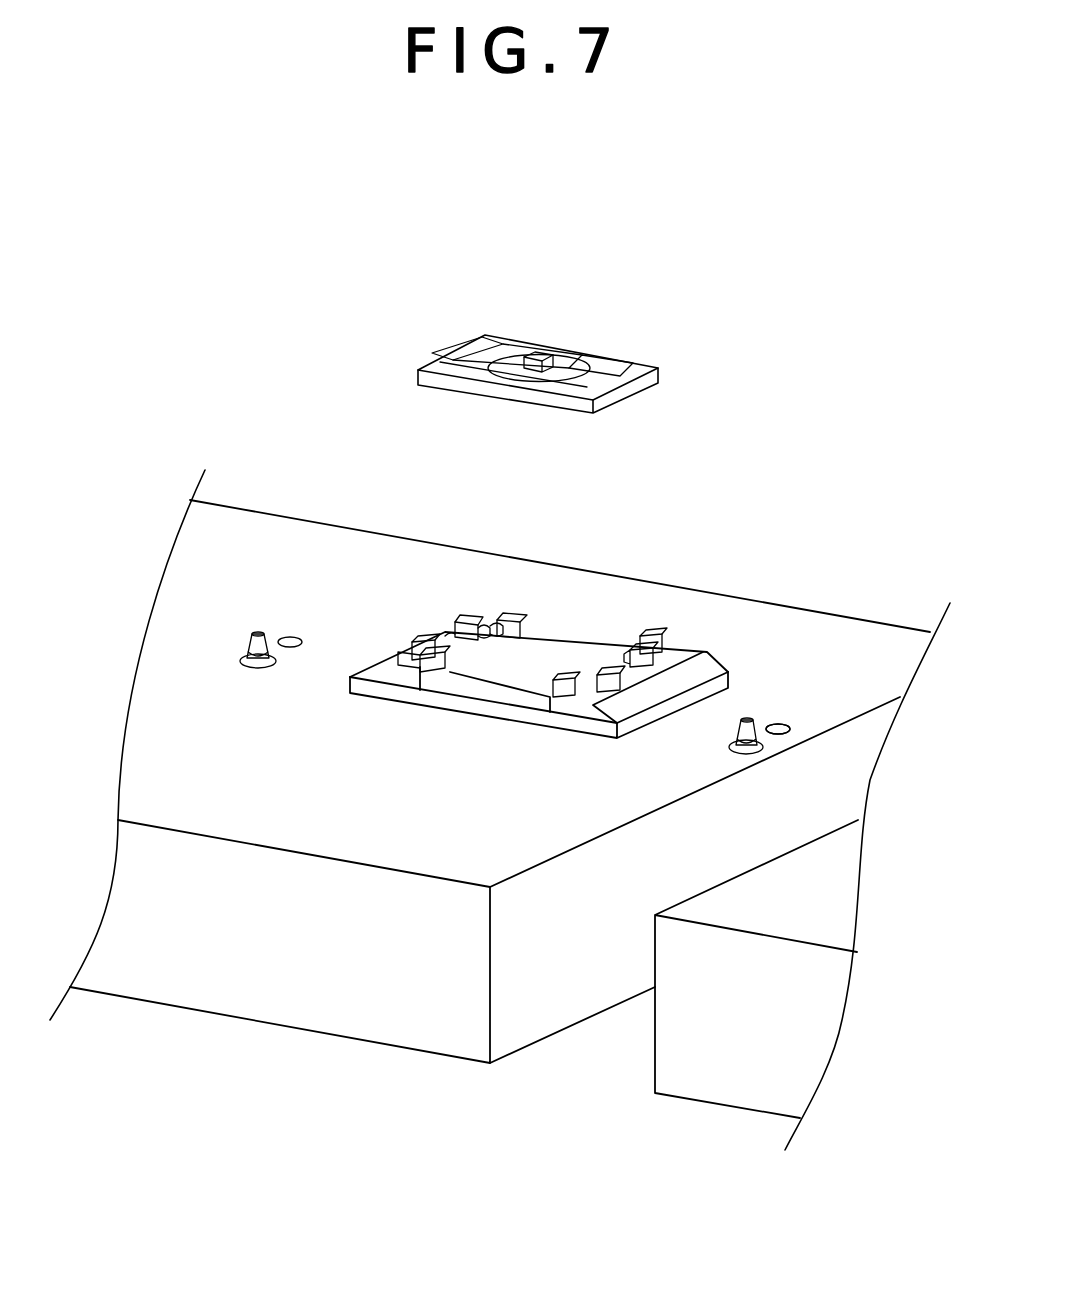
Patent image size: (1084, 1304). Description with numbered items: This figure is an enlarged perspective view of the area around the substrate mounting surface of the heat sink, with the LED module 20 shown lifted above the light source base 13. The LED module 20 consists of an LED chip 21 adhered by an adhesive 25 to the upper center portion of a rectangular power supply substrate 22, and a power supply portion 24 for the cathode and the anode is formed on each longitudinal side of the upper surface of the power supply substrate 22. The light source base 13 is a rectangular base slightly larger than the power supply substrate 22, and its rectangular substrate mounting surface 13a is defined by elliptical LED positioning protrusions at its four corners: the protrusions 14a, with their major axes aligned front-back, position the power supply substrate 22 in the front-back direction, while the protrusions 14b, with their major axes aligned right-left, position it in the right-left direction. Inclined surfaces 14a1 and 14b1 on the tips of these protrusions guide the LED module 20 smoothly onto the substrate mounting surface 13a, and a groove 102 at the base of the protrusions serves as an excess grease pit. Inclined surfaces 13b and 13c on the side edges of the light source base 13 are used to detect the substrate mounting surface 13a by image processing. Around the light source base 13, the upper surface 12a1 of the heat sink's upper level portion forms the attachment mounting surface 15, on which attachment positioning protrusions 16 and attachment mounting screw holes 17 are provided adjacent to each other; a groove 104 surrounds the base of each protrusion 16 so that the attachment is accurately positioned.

The LED module 20 is at (497, 312).
The LED chip 21 is at (540, 352).
The power supply substrate 22 is at (418, 378).
The power supply portion 24 is at (480, 343).
The adhesive 25 is at (572, 365).
The light source base 13 is at (330, 683).
The substrate mounting surface 13a is at (572, 645).
The inclined surface 13b is at (490, 690).
The inclined surface 13c is at (642, 695).
The protrusion 14a is at (515, 610).
The inclined surface 14a1 is at (495, 612).
The protrusion 14b is at (460, 613).
The inclined surface 14b1 is at (477, 613).
The attachment mounting surface 15 is at (732, 622).
The upper surface 12a1 is at (524, 693).
The attachment positioning protrusion 16 is at (258, 632).
The attachment mounting screw hole 17 is at (290, 637).
The groove 102 is at (453, 633).
The groove 104 is at (780, 727).